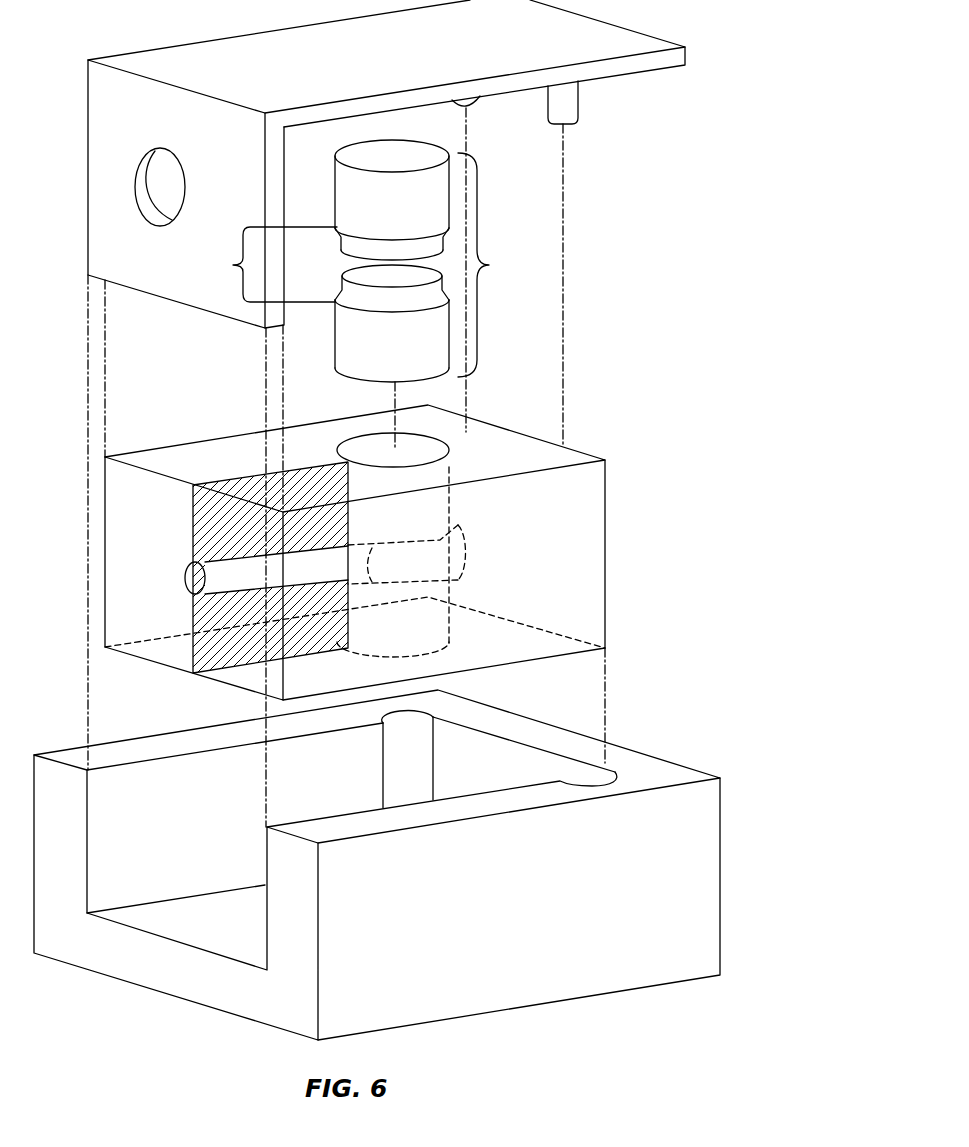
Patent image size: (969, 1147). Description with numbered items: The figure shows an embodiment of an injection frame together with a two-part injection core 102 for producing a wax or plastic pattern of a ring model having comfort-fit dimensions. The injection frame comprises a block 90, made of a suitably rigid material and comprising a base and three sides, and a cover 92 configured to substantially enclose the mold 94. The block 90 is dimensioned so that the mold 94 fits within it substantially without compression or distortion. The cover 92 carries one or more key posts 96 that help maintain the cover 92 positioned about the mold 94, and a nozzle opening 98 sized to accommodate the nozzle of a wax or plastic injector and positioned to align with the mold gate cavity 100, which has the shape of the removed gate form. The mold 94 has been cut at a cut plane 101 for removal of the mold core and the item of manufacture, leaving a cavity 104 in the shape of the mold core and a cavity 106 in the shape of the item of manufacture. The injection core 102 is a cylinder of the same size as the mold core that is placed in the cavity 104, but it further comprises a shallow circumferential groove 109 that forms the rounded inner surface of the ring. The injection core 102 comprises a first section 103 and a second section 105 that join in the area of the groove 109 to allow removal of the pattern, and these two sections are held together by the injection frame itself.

The block 90 is at (721, 853).
The cover 92 is at (652, 36).
The mold 94 is at (606, 556).
The key posts 96 is at (480, 100).
The nozzle opening 98 is at (147, 188).
The cavity 100 is at (186, 578).
The cut plane 101 is at (223, 480).
The injection core 102 is at (503, 265).
The first section 103 is at (413, 214).
The cavity 104 is at (443, 452).
The second section 105 is at (413, 359).
The cavity 106 is at (468, 553).
The shallow circumferential groove 109 is at (263, 264).